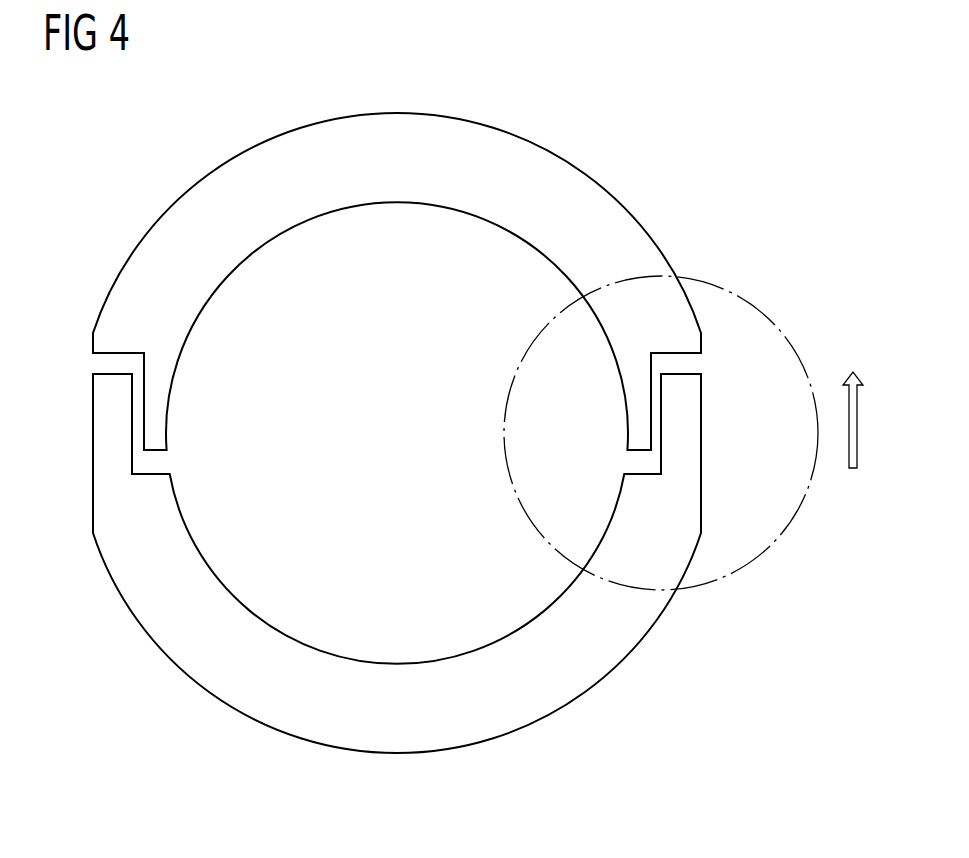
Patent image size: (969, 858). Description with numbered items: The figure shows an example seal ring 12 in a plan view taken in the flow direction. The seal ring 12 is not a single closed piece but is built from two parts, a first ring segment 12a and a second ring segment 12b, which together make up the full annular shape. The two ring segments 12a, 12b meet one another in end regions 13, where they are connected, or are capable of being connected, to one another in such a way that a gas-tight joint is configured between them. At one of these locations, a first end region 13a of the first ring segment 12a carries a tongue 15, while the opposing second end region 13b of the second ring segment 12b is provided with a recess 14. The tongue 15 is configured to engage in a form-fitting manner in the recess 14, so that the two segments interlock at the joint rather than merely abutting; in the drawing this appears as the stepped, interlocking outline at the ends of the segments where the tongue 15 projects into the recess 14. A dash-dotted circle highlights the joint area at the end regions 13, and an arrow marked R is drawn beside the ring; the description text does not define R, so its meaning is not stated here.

The seal ring 12 is at (369, 433).
The first ring segment 12a is at (205, 681).
The second ring segment 12b is at (229, 181).
The end regions 13 is at (673, 278).
The first end region 13a is at (713, 491).
The second end region 13b is at (714, 340).
The recess 14 is at (679, 366).
The tongue 15 is at (688, 432).
The direction of rotation R is at (857, 419).